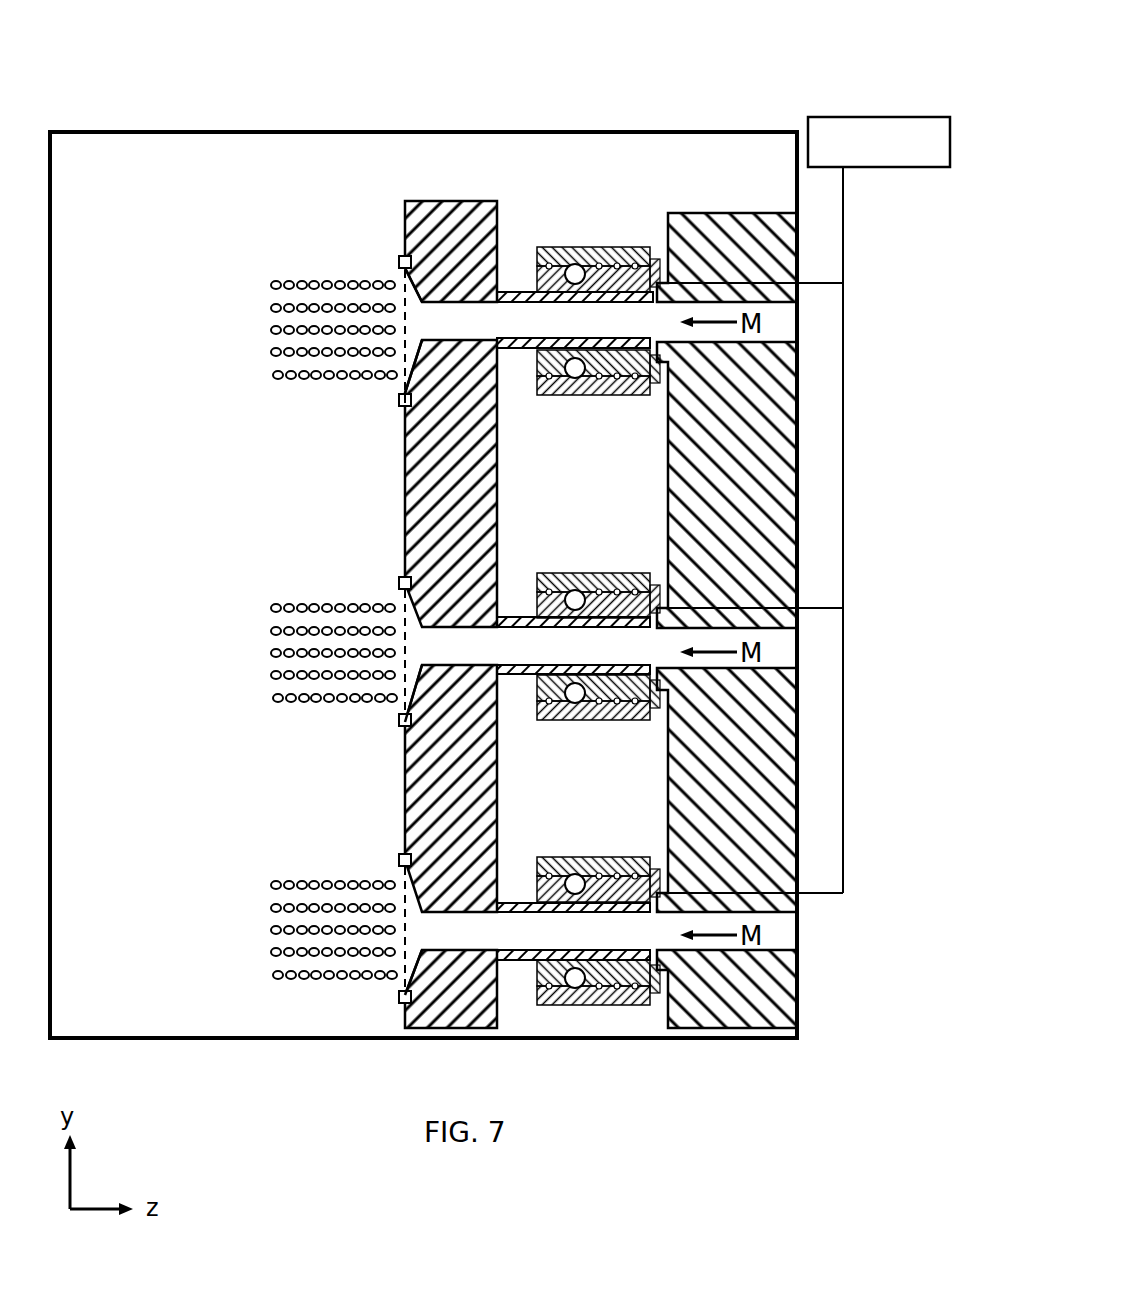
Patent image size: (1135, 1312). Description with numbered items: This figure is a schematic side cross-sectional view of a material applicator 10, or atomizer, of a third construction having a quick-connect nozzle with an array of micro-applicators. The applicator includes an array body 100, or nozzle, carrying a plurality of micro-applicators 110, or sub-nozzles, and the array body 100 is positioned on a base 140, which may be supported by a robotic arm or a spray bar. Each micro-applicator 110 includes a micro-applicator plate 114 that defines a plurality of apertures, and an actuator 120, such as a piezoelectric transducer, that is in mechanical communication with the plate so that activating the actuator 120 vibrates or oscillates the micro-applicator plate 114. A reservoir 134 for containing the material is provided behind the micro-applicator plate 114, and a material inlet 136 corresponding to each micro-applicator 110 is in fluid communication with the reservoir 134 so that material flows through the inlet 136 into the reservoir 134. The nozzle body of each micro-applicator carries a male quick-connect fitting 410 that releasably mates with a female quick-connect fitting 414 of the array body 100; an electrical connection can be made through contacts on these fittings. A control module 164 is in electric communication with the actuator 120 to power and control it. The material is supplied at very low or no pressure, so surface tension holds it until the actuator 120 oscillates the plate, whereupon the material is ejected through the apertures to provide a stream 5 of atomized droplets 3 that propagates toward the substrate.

The material applicator 10 is at (290, 170).
The array body 100 is at (413, 194).
The micro-applicator 110 is at (304, 615).
The stream 5 is at (297, 622).
The atomized droplets 3 is at (305, 630).
The micro-applicator plate 114 is at (294, 646).
The actuator 120 is at (405, 1003).
The reservoir 134 is at (413, 363).
The male quick-connect fitting 410 is at (515, 282).
The female quick-connect fitting 414 is at (601, 238).
The base 140 is at (718, 202).
The control module 164 is at (868, 117).
The material inlet 136 is at (782, 638).